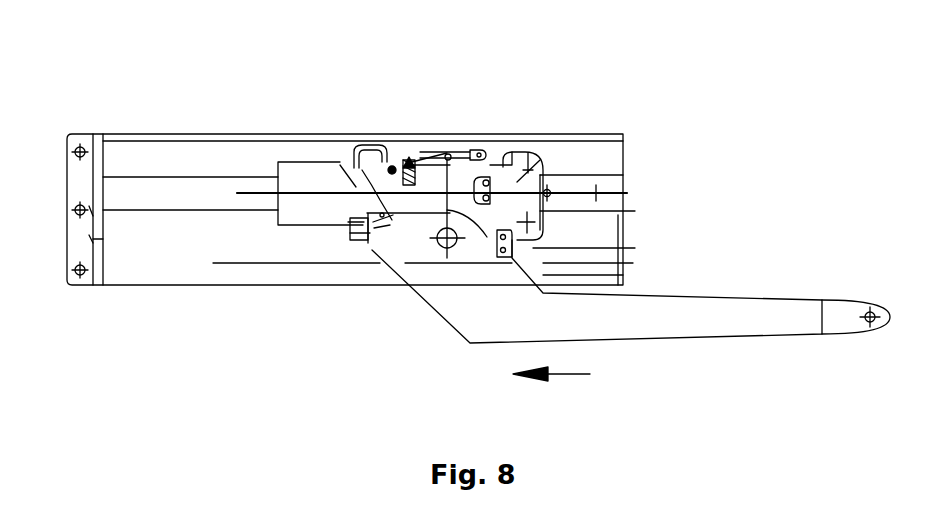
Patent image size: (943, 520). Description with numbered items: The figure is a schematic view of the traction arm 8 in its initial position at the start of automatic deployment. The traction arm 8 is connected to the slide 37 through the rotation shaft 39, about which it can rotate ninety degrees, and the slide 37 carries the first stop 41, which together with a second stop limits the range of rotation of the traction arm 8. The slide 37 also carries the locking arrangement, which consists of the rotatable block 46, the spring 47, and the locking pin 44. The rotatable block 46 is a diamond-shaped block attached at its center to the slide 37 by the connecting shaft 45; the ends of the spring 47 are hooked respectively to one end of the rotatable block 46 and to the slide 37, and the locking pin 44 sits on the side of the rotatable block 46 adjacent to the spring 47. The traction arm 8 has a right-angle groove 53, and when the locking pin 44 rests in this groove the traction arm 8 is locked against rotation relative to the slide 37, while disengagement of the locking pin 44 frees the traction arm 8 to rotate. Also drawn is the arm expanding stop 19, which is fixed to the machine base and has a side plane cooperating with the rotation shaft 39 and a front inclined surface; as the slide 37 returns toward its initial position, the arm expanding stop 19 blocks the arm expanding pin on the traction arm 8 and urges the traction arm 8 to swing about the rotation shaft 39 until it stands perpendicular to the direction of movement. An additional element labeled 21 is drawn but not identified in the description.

The traction arm 8 is at (553, 318).
The arm expanding stop 19 is at (307, 180).
The hook member 21 is at (360, 160).
The slide 37 is at (517, 182).
The rotation shaft 39 is at (445, 241).
The first stop 41 is at (490, 178).
The locking pin 44 is at (430, 155).
The connecting shaft 45 is at (448, 153).
The rotatable block 46 is at (470, 155).
The spring 47 is at (407, 160).
The right-angle groove 53 is at (372, 250).